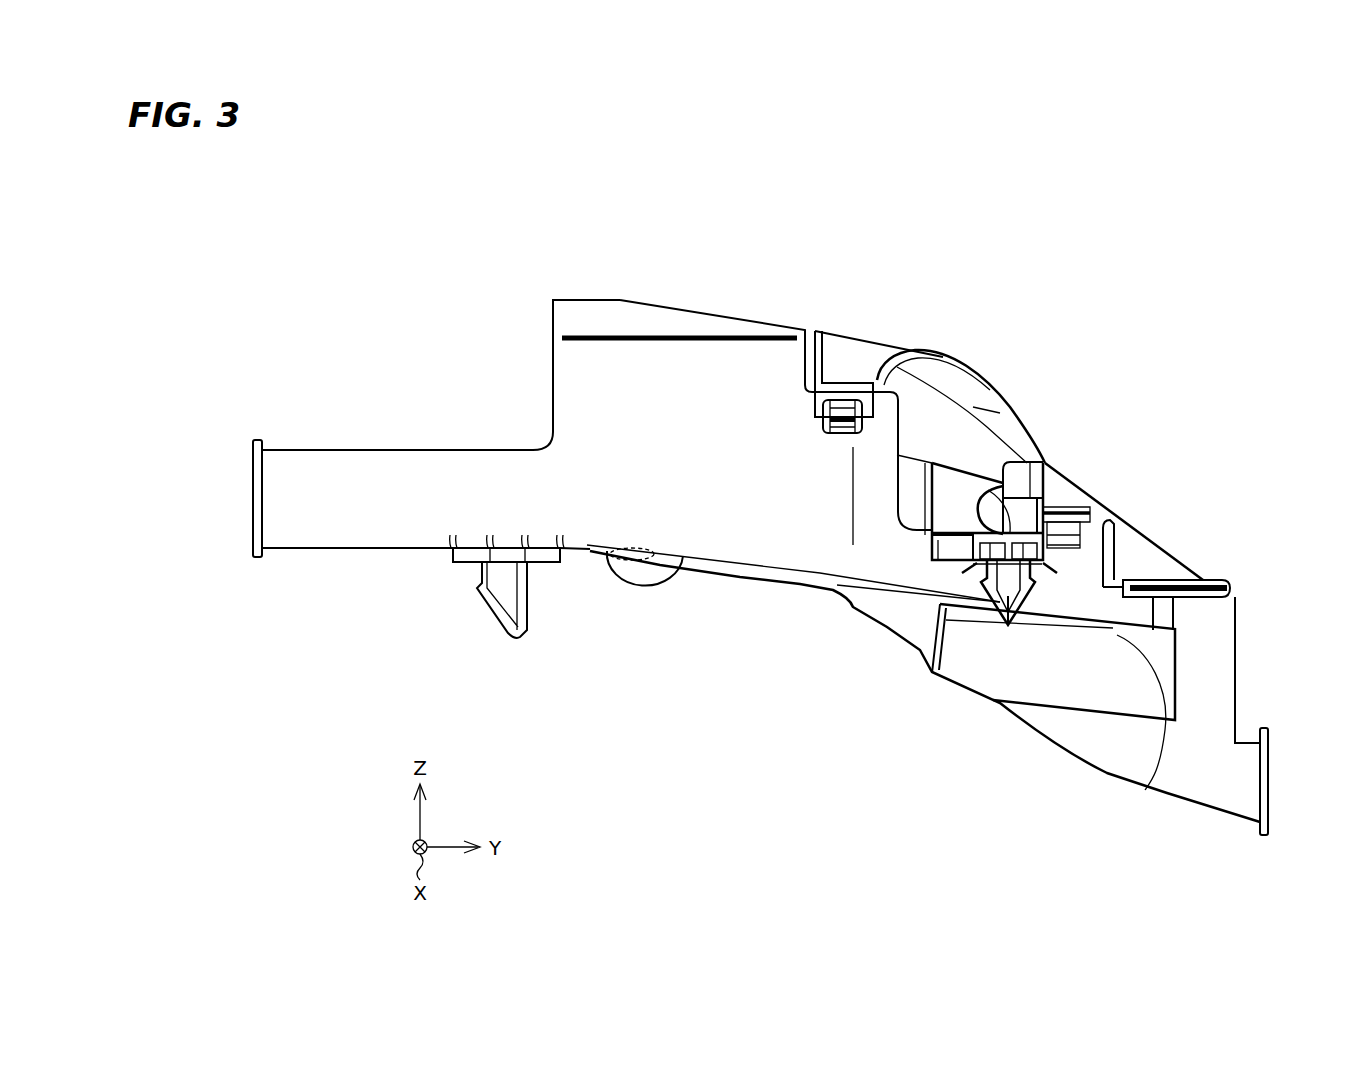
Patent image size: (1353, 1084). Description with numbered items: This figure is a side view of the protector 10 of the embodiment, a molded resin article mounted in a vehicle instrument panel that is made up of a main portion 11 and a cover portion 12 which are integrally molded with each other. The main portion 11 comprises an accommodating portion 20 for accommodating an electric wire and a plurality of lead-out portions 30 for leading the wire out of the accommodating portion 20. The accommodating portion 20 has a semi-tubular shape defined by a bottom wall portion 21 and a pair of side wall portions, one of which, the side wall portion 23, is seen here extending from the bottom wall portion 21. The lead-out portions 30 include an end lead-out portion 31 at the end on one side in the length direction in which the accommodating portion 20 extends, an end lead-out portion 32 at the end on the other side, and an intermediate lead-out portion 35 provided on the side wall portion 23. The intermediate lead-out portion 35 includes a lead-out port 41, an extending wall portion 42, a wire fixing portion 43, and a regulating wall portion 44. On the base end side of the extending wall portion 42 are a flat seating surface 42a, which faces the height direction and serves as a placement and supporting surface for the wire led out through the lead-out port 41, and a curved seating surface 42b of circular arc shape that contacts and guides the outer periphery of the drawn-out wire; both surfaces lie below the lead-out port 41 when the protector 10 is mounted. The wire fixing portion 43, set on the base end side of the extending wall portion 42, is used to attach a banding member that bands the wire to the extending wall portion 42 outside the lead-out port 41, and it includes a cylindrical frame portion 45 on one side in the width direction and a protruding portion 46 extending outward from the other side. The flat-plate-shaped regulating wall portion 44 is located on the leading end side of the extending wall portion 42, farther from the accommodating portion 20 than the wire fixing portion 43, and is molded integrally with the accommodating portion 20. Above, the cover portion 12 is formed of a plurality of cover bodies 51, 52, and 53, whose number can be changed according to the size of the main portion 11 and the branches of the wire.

The protector 10 is at (495, 283).
The main portion 11 is at (589, 553).
The cover portion 12 is at (682, 314).
The accommodating portion 20 is at (793, 587).
The bottom wall portion 21 is at (747, 578).
The side wall portion 23 is at (670, 541).
The lead-out portions 30 is at (765, 634).
The end lead-out portion 31 is at (287, 454).
The end lead-out portion 32 is at (1217, 804).
The intermediate lead-out portion 35 is at (952, 552).
The lead-out port 41 is at (907, 478).
The extending wall portion 42 is at (993, 584).
The flat seating surface 42a is at (952, 532).
The curved seating surface 42b is at (988, 488).
The wire fixing portion 43 is at (979, 465).
The regulating wall portion 44 is at (1043, 500).
The cylindrical frame portion 45 is at (1023, 467).
The protruding portion 46 is at (937, 547).
The cover body 51 is at (580, 304).
The cover body 52 is at (848, 343).
The cover body 53 is at (1133, 546).